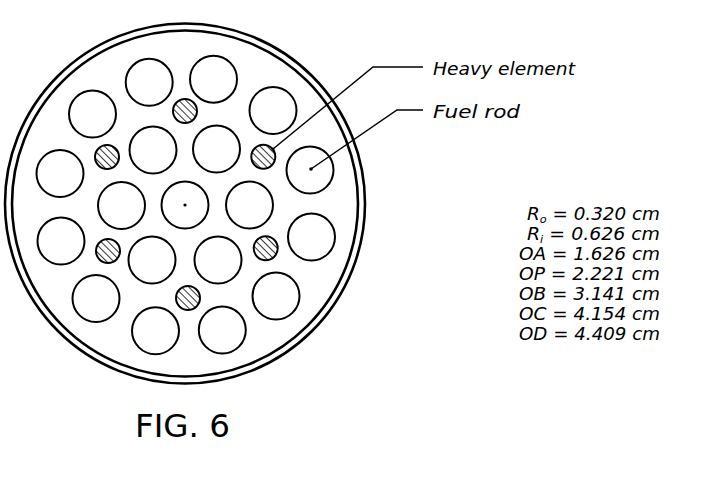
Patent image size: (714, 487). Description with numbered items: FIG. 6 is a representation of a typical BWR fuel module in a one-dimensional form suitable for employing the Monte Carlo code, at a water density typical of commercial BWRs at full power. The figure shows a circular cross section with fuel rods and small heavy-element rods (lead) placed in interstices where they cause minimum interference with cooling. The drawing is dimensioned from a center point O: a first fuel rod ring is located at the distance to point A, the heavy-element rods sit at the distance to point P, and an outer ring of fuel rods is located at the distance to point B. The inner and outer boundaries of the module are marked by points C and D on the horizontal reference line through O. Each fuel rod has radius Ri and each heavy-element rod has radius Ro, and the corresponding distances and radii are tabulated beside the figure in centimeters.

The fuel rod at radius OA (first ring) A is at (364, 206).
The fuel rod at radius OB (second ring) B is at (185, 205).
The inner wall of vessel (radius OC) C is at (185, 204).
The outer wall of vessel (radius OD) D is at (192, 204).
The central fuel rod / center of core O is at (185, 205).
The heavy element at radius OP P is at (185, 205).
The fuel rod (radius Ri) Ri is at (216, 172).
The heavy element (radius Ro) Ro is at (185, 111).